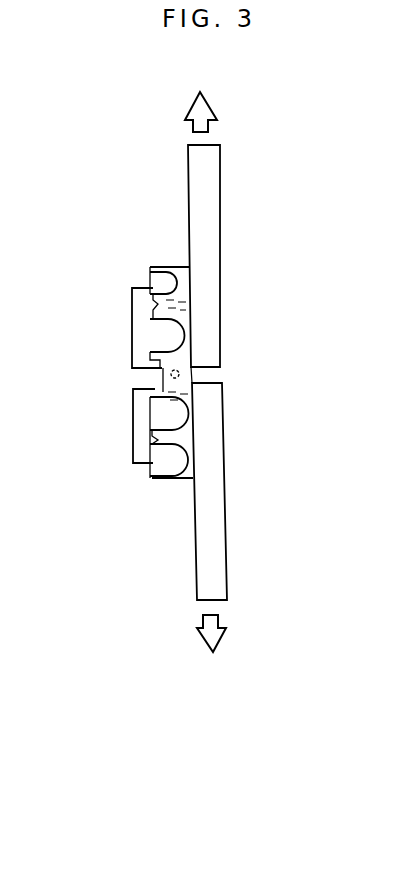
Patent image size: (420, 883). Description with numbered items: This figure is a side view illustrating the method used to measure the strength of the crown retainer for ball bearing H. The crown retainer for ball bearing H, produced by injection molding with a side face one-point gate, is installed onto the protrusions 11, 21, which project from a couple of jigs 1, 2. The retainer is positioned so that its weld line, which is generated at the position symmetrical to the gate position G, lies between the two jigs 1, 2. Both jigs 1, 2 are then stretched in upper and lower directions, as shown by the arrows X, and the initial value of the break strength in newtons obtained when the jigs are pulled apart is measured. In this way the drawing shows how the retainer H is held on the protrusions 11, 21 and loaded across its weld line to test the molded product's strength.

The jig 1 is at (200, 238).
The jig 2 is at (208, 533).
The protrusion 11 is at (132, 323).
The protrusion 21 is at (133, 440).
The crown retainer for ball bearing H is at (165, 262).
The gate position G is at (180, 374).
The arrows X is at (208, 100).